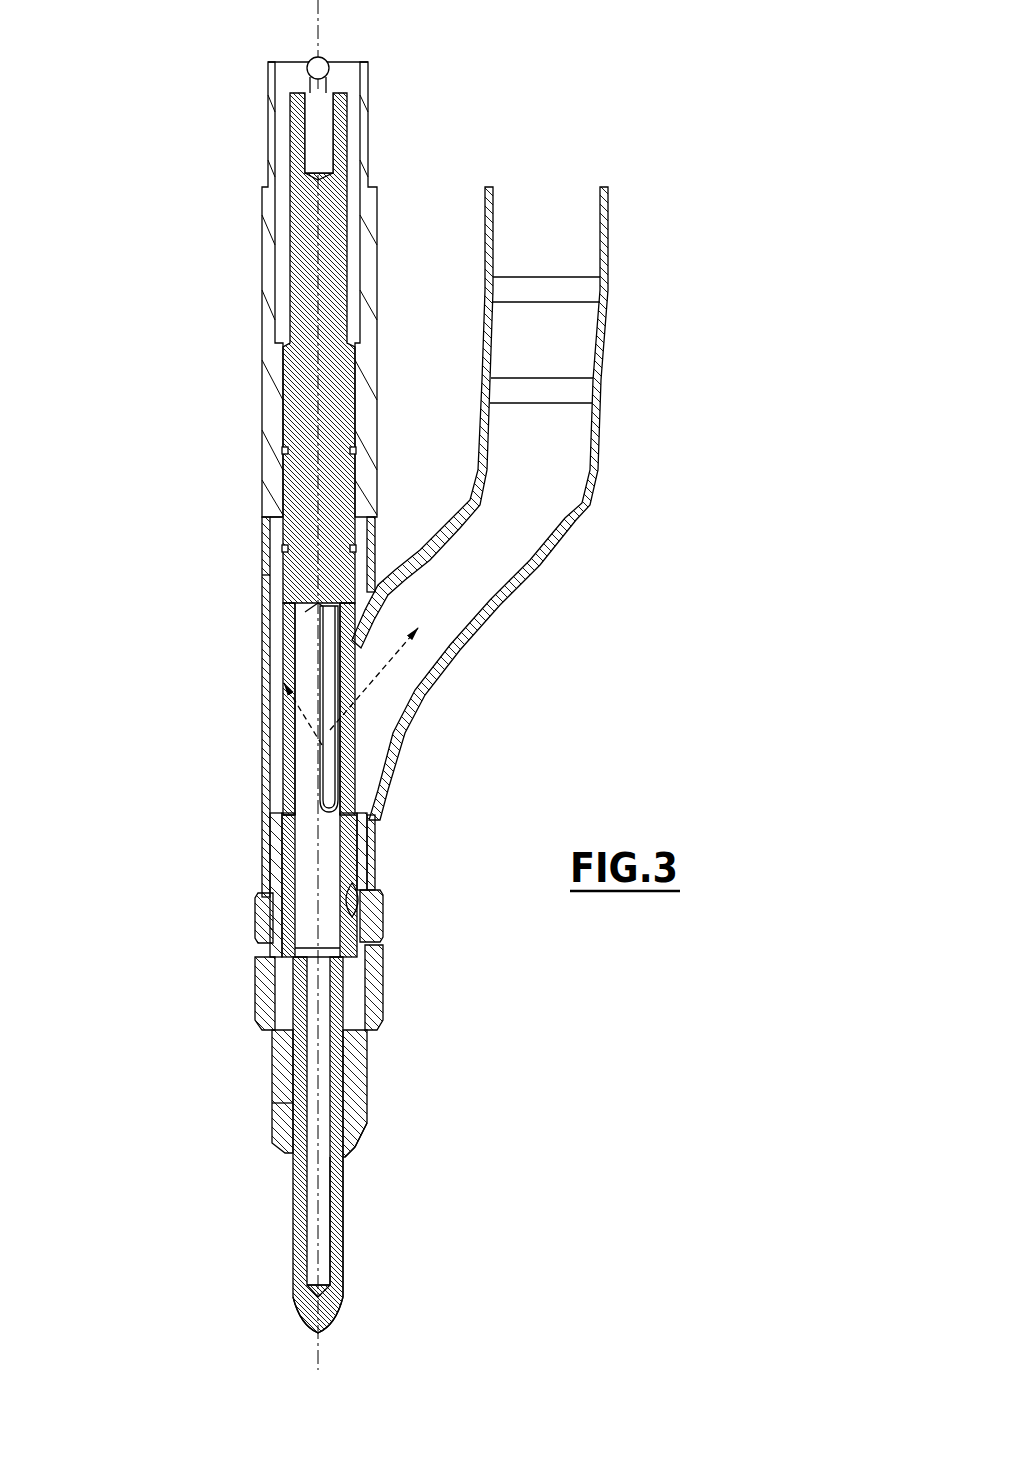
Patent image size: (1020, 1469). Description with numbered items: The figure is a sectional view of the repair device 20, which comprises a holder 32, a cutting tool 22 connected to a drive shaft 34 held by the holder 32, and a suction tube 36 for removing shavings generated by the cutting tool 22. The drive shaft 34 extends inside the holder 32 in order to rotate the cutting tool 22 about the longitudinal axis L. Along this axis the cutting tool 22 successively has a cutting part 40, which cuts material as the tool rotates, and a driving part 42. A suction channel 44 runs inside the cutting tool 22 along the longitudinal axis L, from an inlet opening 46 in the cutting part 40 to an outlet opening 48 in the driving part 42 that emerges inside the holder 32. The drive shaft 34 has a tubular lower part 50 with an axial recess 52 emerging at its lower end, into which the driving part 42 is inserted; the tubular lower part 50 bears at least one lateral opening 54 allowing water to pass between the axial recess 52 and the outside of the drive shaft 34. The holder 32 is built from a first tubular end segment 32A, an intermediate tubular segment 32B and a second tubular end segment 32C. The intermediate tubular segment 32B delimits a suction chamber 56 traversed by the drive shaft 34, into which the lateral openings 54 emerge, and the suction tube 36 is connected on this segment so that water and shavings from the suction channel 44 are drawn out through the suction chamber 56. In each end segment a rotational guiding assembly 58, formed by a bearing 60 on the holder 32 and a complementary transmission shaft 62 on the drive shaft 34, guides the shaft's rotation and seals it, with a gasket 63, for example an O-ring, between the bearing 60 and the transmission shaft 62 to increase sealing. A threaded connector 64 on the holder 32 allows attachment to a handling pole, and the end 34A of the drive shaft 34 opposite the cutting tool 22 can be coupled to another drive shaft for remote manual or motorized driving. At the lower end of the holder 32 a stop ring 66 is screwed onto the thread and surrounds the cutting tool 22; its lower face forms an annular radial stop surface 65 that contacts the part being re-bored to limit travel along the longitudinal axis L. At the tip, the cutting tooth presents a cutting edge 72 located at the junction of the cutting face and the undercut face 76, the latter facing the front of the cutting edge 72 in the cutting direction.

The repair device 20 is at (700, 133).
The cutting tool 22 is at (284, 1244).
The holder 32 is at (252, 262).
The first tubular end segment 32A is at (256, 936).
The intermediate tubular segment 32B is at (266, 656).
The second tubular end segment 32C is at (275, 412).
The drive shaft 34 is at (305, 480).
The end of the drive shaft 34A is at (325, 108).
The suction tube 36 is at (584, 534).
The cutting part 40 is at (293, 1190).
The driving part 42 is at (300, 1023).
The suction channel 44 is at (300, 1104).
The inlet opening 46 is at (339, 1236).
The outlet opening 48 is at (358, 951).
The tubular lower part 50 is at (266, 853).
The axial recess 52 is at (300, 882).
The lateral opening 54 is at (290, 739).
The suction chamber 56 is at (284, 704).
The rotational guiding assembly 58 is at (250, 556).
The bearing 60 is at (283, 521).
The transmission shaft 62 is at (270, 576).
The gasket 63 is at (352, 452).
The connector 64 is at (260, 99).
The stop surface 65 is at (351, 1151).
The stop ring 66 is at (366, 1136).
The cutting edge 72 is at (341, 1291).
The undercut face 76 is at (336, 1259).
The longitudinal axis L is at (320, 1351).